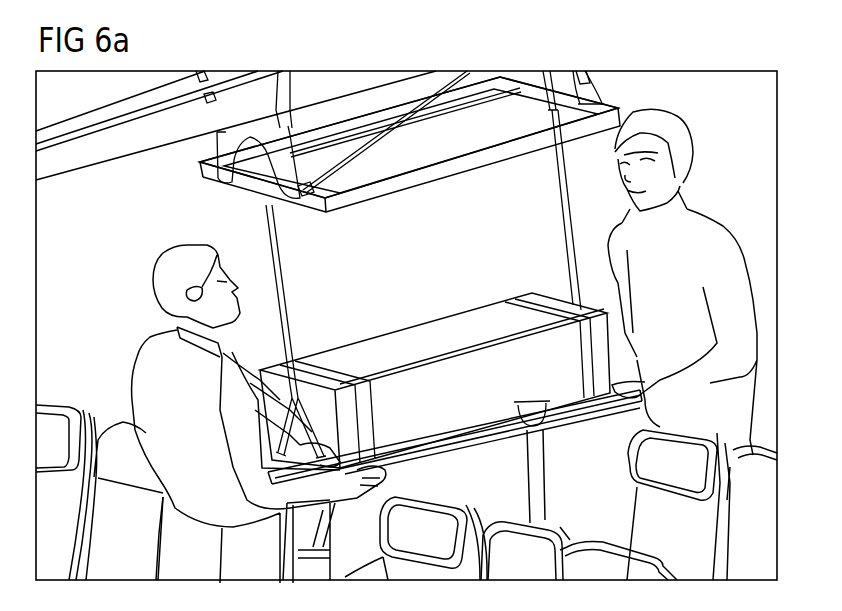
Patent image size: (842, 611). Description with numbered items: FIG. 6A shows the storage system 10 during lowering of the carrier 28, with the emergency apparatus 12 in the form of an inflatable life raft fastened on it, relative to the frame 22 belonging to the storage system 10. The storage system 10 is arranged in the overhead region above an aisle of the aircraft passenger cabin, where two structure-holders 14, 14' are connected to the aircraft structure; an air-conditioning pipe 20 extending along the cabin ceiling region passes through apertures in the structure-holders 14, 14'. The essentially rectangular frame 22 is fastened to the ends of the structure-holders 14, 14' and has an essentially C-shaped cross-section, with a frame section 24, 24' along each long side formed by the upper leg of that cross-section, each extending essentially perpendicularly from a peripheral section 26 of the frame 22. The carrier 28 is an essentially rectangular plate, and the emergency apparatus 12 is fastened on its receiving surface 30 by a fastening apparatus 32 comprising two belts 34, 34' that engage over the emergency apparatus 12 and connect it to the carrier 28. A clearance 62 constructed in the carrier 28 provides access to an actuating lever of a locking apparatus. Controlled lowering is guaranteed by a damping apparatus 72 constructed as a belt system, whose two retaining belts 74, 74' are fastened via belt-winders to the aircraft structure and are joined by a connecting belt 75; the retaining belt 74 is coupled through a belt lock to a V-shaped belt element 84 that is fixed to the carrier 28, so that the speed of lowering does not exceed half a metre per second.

The storage system 10 is at (612, 85).
The emergency apparatus 12 is at (484, 399).
The structure-holder 14 is at (209, 63).
The structure-holder 14' is at (592, 52).
The air-conditioning pipe 20 is at (97, 153).
The frame 22 is at (468, 162).
The frame section 24 is at (573, 127).
The frame section 24' is at (398, 133).
The peripheral section 26 is at (200, 166).
The carrier 28 is at (443, 445).
The receiving surface 30 is at (390, 460).
The fastening apparatus 32 is at (372, 366).
The belt 34 is at (347, 412).
The belt 34' is at (549, 349).
The clearance 62 is at (500, 430).
The damping apparatus 72 is at (312, 268).
The retaining belt 74 is at (301, 295).
The retaining belt 74' is at (544, 210).
The connecting belt 75 is at (368, 353).
The belt element 84 is at (313, 437).